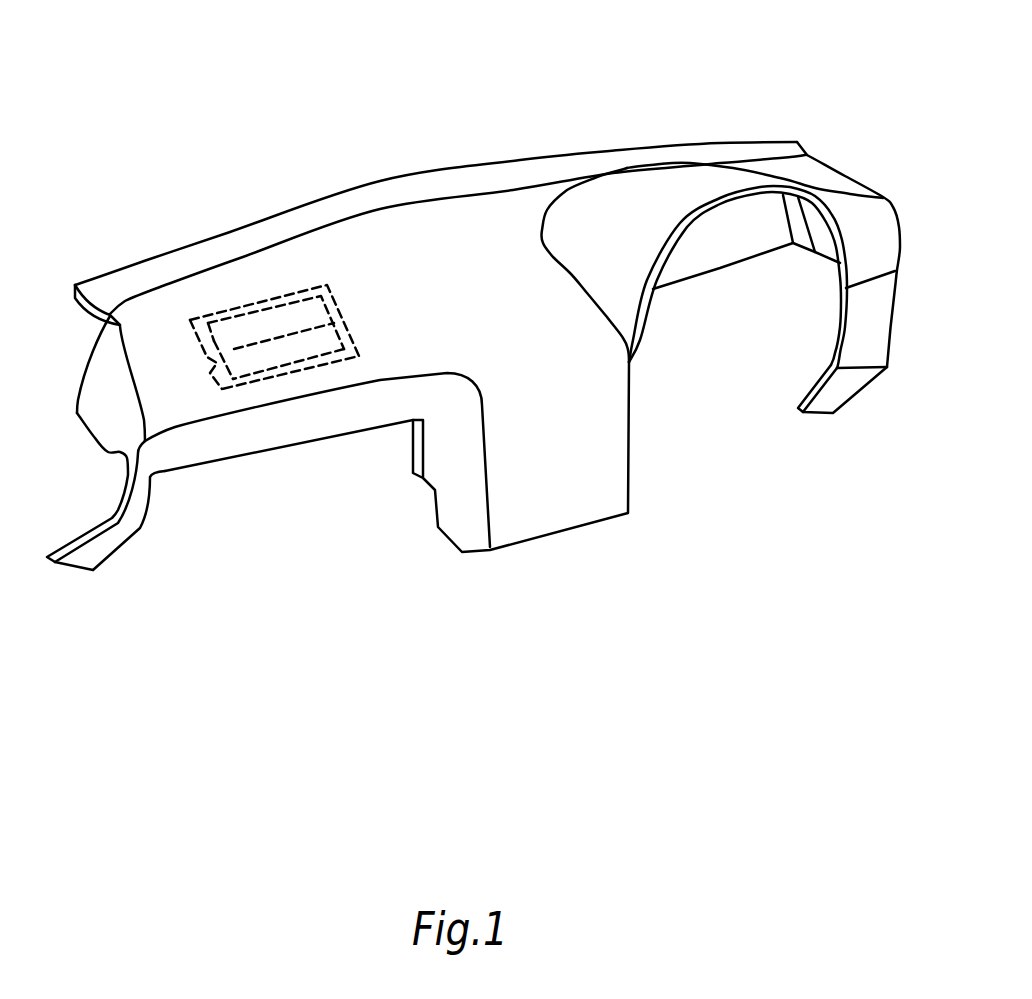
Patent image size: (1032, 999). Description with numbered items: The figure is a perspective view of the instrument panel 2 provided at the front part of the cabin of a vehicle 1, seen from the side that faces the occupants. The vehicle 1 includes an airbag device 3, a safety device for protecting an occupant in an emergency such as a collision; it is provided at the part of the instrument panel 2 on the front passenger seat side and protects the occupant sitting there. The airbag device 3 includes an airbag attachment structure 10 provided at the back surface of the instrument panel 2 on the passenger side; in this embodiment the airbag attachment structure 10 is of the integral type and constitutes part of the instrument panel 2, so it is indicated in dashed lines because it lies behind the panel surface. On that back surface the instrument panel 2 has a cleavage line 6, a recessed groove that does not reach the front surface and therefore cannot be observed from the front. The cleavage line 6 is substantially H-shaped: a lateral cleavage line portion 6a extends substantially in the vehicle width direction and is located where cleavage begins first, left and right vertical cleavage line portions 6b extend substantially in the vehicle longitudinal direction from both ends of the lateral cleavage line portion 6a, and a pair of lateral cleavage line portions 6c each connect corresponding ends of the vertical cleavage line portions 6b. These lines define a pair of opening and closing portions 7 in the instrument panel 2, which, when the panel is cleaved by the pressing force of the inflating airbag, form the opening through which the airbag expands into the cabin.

The vehicle 1 is at (783, 95).
The instrument panel 2 is at (438, 232).
The airbag device 3 is at (302, 287).
The cleavage line 6 is at (269, 431).
The lateral cleavage line portion 6a is at (235, 346).
The vertical cleavage line portion 6b is at (210, 373).
The lateral cleavage line portion 6c is at (226, 319).
The opening and closing portion 7 is at (207, 357).
The airbag attachment structure 10 is at (207, 318).